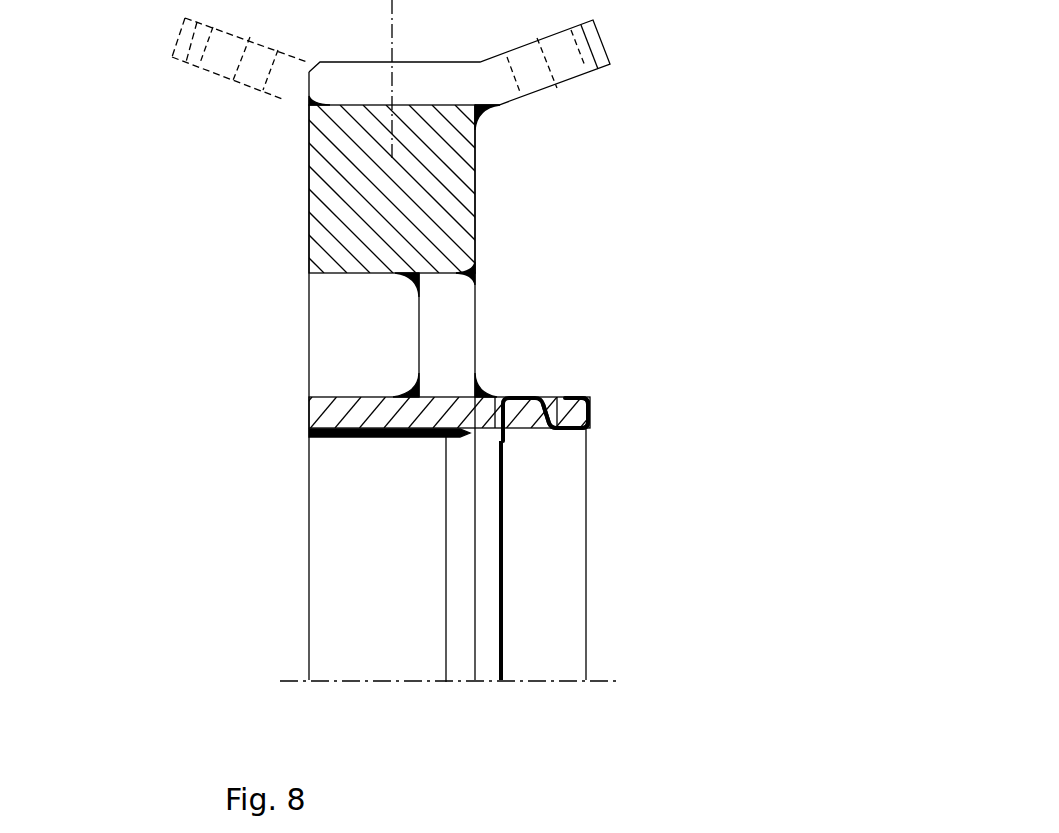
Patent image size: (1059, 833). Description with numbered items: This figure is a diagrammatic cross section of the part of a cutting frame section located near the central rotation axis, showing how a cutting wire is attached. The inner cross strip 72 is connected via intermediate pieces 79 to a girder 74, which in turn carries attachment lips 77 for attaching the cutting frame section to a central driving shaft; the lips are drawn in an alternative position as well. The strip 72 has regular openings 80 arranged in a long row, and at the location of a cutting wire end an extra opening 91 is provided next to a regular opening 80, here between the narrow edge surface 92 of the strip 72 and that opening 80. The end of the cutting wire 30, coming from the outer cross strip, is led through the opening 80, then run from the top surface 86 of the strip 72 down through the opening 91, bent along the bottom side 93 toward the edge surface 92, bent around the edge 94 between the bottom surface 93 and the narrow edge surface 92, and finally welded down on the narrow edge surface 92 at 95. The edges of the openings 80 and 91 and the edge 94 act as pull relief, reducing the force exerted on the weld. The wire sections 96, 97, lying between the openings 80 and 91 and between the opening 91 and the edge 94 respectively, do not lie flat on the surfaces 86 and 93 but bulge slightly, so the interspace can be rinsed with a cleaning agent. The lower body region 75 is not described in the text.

The cutting wire 30 is at (503, 648).
The strip 72 is at (343, 413).
The girder 74 is at (360, 193).
The housing body 75 is at (380, 595).
The attachment lips 77 is at (243, 48).
The intermediate pieces 79 is at (455, 335).
The openings 80 is at (275, 496).
The top surface 86 is at (663, 293).
The extra opening 91 is at (652, 519).
The narrow edge surface 92 is at (598, 416).
The bottom side 93 is at (632, 552).
The edge 94 is at (591, 431).
The weld location 95 is at (595, 400).
The wire section 96 is at (635, 252).
The wire section 97 is at (658, 497).